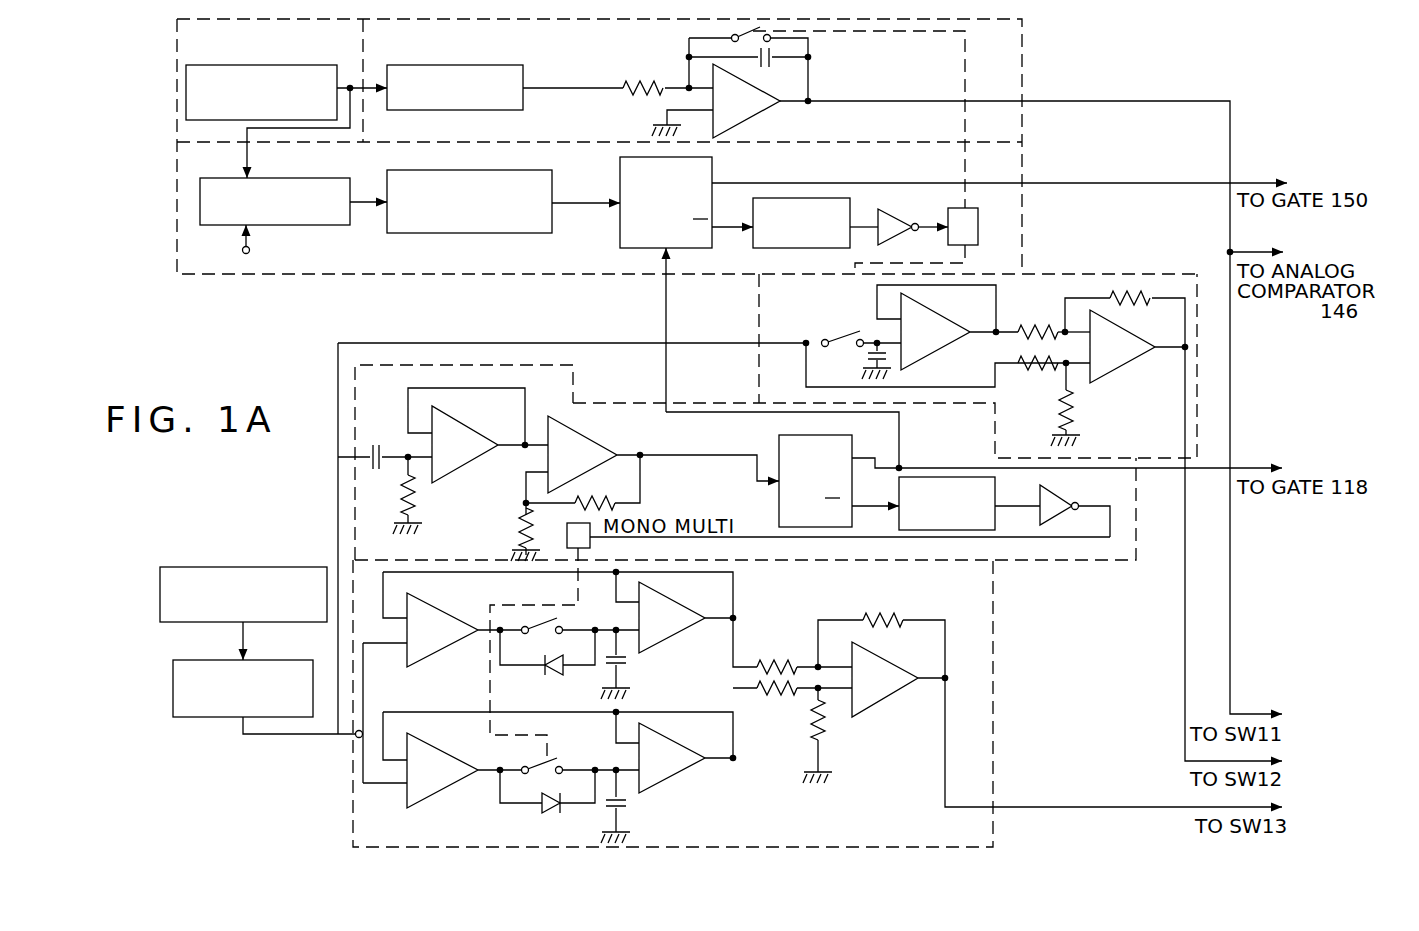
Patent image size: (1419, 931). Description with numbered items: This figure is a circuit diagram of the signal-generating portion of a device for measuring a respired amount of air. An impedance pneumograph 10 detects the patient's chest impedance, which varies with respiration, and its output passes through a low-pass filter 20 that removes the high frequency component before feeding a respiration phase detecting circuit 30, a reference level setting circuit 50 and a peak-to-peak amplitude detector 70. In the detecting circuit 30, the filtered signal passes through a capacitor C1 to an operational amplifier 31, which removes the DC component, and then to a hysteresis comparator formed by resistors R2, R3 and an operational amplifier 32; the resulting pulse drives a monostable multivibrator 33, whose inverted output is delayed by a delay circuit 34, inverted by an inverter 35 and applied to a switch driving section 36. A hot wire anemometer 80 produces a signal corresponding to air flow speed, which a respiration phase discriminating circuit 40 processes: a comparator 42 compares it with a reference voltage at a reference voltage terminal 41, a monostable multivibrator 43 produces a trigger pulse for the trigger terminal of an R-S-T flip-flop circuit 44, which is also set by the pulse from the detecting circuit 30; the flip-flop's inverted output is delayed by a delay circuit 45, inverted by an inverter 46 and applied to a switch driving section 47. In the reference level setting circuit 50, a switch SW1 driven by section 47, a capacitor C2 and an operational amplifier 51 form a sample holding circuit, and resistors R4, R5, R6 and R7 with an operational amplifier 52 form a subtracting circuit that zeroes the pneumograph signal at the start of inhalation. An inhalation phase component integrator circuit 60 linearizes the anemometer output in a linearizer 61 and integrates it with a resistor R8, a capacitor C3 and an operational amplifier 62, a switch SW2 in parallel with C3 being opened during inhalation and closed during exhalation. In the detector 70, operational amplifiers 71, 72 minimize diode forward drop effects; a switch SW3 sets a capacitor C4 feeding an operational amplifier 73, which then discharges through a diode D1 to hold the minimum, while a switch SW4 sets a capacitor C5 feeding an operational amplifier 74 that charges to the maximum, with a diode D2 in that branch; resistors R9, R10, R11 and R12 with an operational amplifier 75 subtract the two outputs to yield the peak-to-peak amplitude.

The impedance pneumograph 10 is at (236, 566).
The low-pass filter 20 is at (228, 660).
The respiration phase detecting circuit 30 is at (604, 401).
The operational amplifier 31 is at (462, 467).
The operational amplifier 32 is at (590, 435).
The monostable multivibrator 33 is at (779, 510).
The delay circuit 34 is at (995, 500).
The inverter 35 is at (1066, 496).
The switch driving section 36 is at (590, 540).
The respiration phase discriminating circuit 40 is at (1026, 240).
The reference voltage terminal 41 is at (242, 250).
The comparator 42 is at (304, 226).
The monostable multivibrator 43 is at (450, 237).
The R-S-T flip-flop circuit 44 is at (620, 240).
The delay circuit 45 is at (838, 198).
The inverter 46 is at (903, 222).
The switch driving section 47 is at (980, 213).
The reference level setting circuit 50 is at (757, 316).
The operational amplifier 51 is at (940, 345).
The operational amplifier 52 is at (1138, 360).
The inhalation phase component integrator circuit 60 is at (1024, 28).
The linearizer 61 is at (497, 58).
The operational amplifier 62 is at (748, 112).
The peak-to-peak amplitude detector 70 is at (1010, 714).
The operational amplifier 71 is at (448, 640).
The operational amplifier 72 is at (452, 780).
The operational amplifier 73 is at (685, 627).
The operational amplifier 74 is at (688, 768).
The operational amplifier 75 is at (885, 694).
The hot wire anemometer 80 is at (318, 58).
The resistor R2 is at (524, 522).
The resistor R3 is at (594, 498).
The resistor R4 is at (1038, 322).
The resistor R5 is at (1045, 370).
The resistor R6 is at (1074, 405).
The resistor R7 is at (1140, 304).
The resistor R8 is at (625, 97).
The resistor R9 is at (782, 660).
The resistor R10 is at (785, 696).
The resistor R11 is at (826, 738).
The resistor R12 is at (890, 616).
The capacitor C1 is at (375, 470).
The capacitor C2 is at (862, 356).
The capacitor C3 is at (772, 64).
The capacitor C4 is at (627, 662).
The capacitor C5 is at (627, 803).
The diode D1 is at (555, 672).
The diode D2 is at (545, 812).
The switch SW1 is at (840, 328).
The switch SW2 is at (745, 28).
The switch SW3 is at (540, 620).
The switch SW4 is at (535, 760).